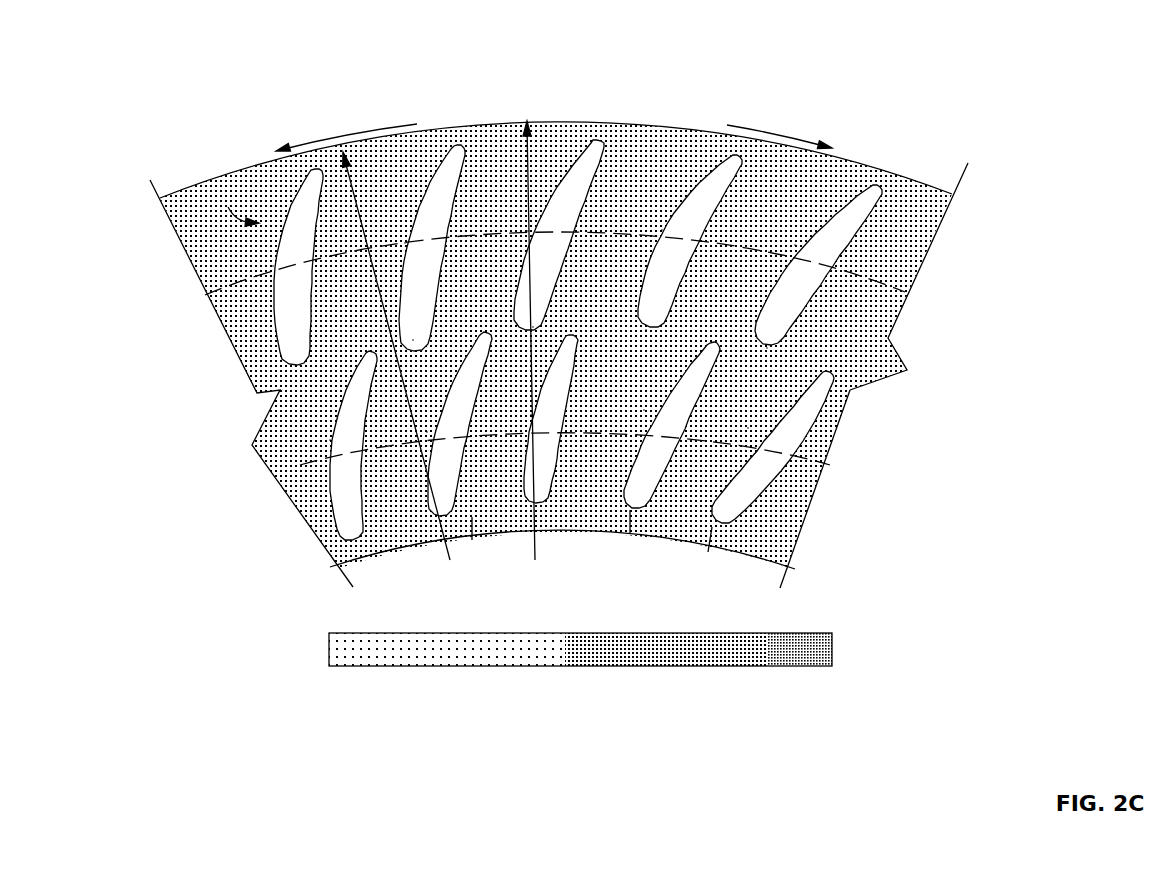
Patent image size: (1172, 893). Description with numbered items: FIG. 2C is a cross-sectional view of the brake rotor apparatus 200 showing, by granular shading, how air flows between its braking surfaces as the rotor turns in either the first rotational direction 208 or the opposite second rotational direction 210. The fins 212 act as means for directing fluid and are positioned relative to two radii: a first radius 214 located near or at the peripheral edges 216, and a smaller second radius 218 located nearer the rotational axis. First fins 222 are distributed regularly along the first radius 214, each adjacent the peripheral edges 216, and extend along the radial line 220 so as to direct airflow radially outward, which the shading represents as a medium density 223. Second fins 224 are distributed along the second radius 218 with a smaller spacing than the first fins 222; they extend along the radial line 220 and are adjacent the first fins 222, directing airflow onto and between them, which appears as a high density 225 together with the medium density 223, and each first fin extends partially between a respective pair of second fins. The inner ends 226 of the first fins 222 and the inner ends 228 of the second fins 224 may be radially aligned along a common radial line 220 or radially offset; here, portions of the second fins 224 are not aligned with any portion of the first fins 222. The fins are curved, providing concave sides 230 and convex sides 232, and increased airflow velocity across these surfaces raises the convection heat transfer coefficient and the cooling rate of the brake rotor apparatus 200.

The brake rotor apparatus 200 is at (719, 49).
The first rotational direction 208 is at (780, 130).
The second rotational direction 210 is at (298, 147).
The fins 212 is at (232, 205).
The first radius 214 is at (895, 292).
The peripheral edges 216 is at (867, 165).
The second radius 218 is at (838, 466).
The radial line 220 is at (531, 140).
The first fins 222 is at (330, 216).
The medium density 223 is at (617, 653).
The second fins 224 is at (380, 394).
The high density 225 is at (833, 648).
The inner ends of the first fins 226 is at (300, 365).
The inner ends of the second fins 228 is at (541, 546).
The concave sides 230 is at (316, 262).
The convex sides 232 is at (273, 265).